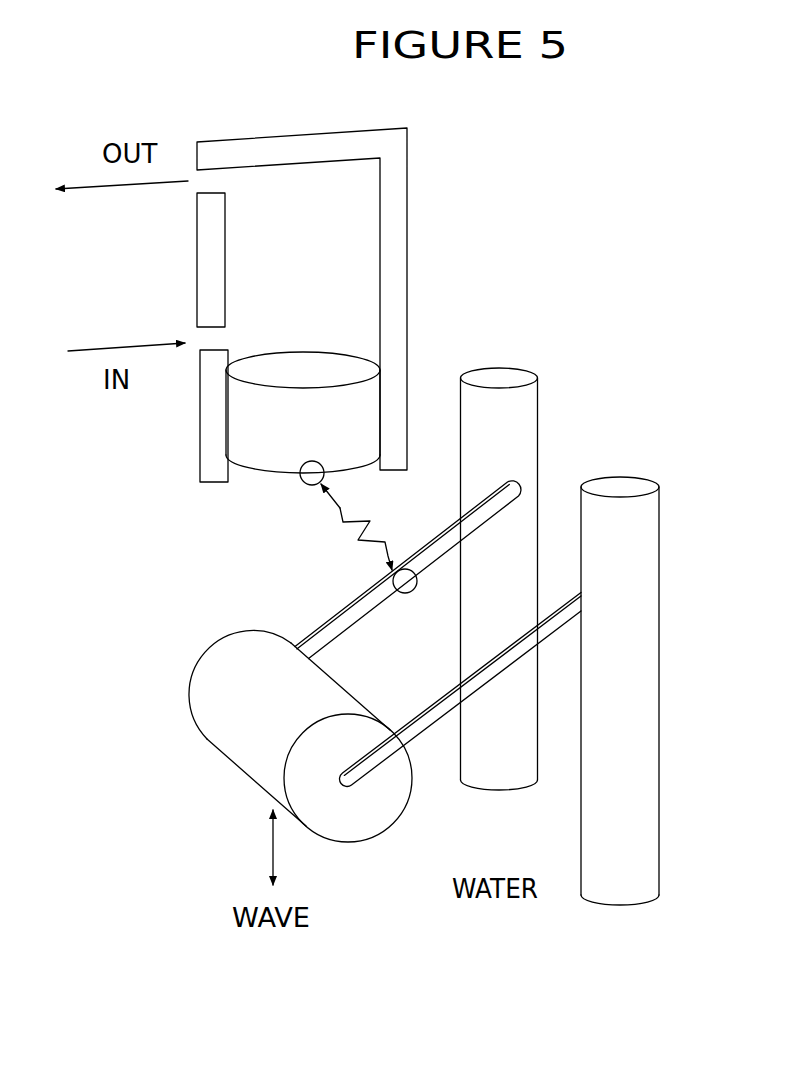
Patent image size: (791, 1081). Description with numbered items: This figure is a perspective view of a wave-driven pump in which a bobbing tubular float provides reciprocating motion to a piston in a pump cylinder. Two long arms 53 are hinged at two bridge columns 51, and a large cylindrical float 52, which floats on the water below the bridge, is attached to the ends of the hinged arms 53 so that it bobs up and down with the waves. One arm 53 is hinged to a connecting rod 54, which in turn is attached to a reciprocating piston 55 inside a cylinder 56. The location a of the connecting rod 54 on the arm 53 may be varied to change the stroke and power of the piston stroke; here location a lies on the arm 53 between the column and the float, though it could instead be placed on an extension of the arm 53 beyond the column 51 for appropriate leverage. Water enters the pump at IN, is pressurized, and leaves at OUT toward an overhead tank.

The bridge columns 51 is at (540, 410).
The cylindrical float 52 is at (217, 632).
The long arms 53 is at (438, 560).
The connecting rod 54 is at (340, 508).
The reciprocating piston 55 is at (302, 349).
The cylinder 56 is at (411, 197).
The location of the connection rod on the arm a is at (404, 597).